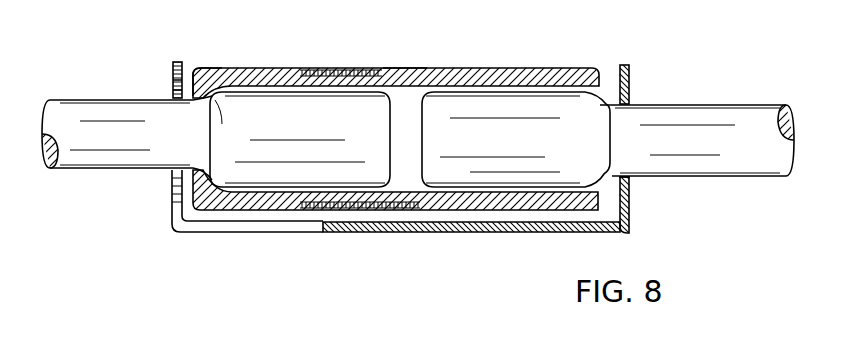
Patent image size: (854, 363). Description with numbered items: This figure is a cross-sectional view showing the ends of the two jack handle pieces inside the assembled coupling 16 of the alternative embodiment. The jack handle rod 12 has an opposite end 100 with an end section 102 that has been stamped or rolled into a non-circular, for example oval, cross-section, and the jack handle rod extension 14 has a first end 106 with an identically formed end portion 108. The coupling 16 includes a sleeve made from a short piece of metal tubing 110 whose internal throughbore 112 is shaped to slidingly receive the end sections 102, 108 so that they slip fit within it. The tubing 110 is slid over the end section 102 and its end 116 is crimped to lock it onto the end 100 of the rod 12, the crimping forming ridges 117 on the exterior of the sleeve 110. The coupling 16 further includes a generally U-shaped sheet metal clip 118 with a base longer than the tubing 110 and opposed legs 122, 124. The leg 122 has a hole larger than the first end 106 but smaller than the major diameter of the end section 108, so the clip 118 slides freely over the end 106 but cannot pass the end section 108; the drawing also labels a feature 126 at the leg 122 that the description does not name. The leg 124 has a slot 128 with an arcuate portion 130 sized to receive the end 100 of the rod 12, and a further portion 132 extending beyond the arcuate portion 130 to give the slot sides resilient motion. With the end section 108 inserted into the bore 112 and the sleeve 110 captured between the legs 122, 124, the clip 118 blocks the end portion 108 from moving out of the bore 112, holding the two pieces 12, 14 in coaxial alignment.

The jack handle rod 12 is at (74, 93).
The jack handle rod extension 14 is at (762, 96).
The coupling 16 is at (438, 64).
The opposite end 100 is at (137, 171).
The end section 102 is at (300, 131).
The first end 106 is at (652, 104).
The end portion 108 is at (502, 100).
The metal tubing 110 is at (394, 70).
The internal throughbore 112 is at (527, 190).
The end of the tubing 116 is at (202, 70).
The ridges 117 is at (263, 69).
The clip 118 is at (388, 240).
The leg 122 is at (631, 203).
The leg 124 is at (172, 211).
The flange tab 126 is at (631, 187).
The slot 128 is at (173, 72).
The arcuate portion 130 is at (173, 95).
The further portion 132 is at (218, 224).